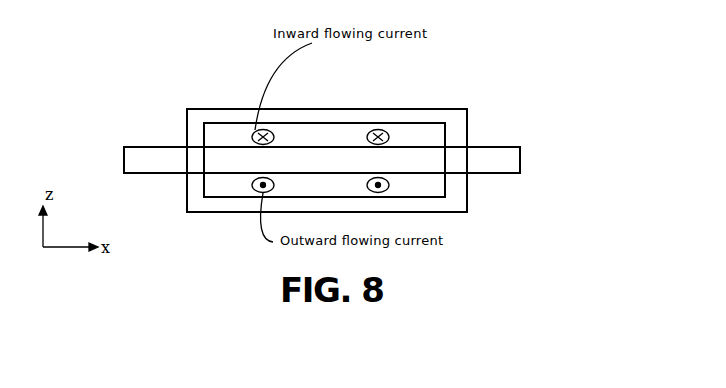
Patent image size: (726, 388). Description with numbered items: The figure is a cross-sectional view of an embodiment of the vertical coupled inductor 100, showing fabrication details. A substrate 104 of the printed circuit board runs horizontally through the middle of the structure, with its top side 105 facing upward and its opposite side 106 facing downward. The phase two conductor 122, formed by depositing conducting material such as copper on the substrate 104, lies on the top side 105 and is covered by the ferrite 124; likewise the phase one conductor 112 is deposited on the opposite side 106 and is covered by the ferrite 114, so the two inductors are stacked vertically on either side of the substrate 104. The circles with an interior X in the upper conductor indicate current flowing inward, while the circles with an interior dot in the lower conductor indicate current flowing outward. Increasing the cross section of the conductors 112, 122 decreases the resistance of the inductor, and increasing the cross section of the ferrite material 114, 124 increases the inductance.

The vertical coupled inductor 100 is at (215, 54).
The substrate 104 is at (146, 156).
The top side 105 is at (493, 146).
The substrate lower surface 106 is at (163, 175).
The conductor 112 is at (425, 185).
The ferrite 114 is at (193, 185).
The conductor 122 is at (400, 135).
The ferrite 124 is at (192, 122).